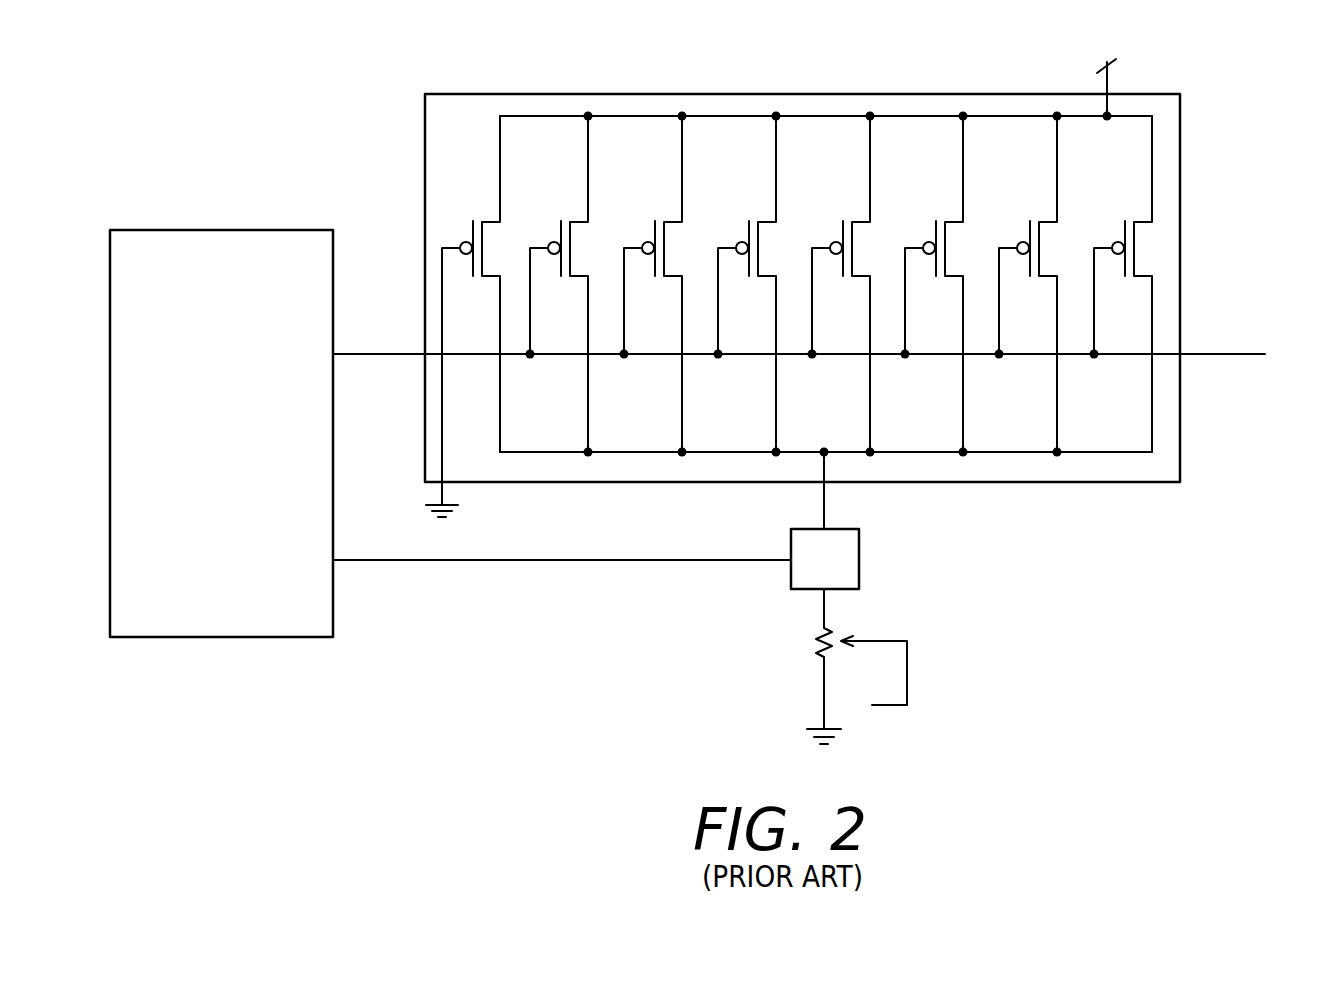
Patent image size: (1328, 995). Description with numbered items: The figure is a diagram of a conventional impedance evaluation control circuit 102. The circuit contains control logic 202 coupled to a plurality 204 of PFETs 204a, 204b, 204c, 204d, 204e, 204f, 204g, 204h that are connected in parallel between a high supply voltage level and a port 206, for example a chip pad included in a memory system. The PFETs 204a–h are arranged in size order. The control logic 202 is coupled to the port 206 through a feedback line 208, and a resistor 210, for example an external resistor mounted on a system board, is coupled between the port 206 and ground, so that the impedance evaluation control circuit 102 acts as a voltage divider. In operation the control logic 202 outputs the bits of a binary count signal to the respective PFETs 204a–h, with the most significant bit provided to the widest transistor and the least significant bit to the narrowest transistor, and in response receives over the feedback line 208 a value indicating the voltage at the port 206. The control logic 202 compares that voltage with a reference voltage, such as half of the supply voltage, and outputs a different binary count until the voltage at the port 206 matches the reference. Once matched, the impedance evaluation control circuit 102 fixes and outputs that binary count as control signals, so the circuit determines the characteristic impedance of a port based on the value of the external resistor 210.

The impedance evaluation control circuit 102 is at (280, 78).
The control logic 202 is at (245, 230).
The plurality of PFETs 204 is at (1186, 129).
The PFET 204a is at (495, 221).
The PFET 204b is at (585, 221).
The PFET 204c is at (679, 221).
The PFET 204d is at (773, 221).
The PFET 204e is at (867, 221).
The PFET 204f is at (960, 221).
The PFET 204g is at (1054, 221).
The PFET 204h is at (1149, 221).
The port 206 is at (860, 541).
The feedback line 208 is at (553, 551).
The resistor 210 is at (826, 628).